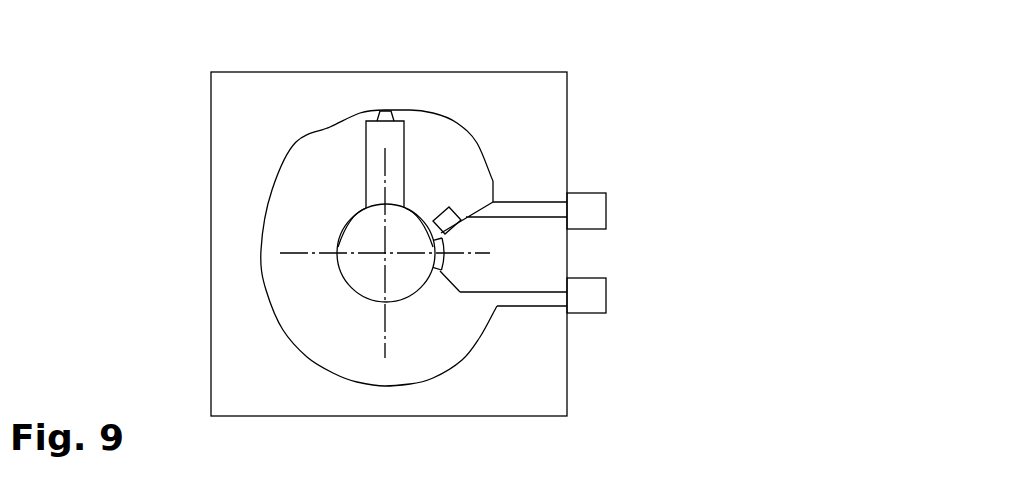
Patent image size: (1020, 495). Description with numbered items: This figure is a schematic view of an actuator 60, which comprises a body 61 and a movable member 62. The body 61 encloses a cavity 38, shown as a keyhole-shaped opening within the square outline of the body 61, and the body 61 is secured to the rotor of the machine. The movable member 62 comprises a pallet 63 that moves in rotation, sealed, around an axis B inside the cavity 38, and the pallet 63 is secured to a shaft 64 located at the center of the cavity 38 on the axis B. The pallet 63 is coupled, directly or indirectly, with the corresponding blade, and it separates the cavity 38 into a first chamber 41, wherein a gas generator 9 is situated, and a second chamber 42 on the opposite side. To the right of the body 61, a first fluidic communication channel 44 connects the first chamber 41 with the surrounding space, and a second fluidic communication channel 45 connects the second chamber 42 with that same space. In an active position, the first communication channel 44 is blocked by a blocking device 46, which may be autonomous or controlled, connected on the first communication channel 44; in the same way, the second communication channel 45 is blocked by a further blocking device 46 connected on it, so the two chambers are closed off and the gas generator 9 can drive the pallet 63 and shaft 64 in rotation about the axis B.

The actuator 60 is at (489, 50).
The body 61 is at (268, 72).
The cavity 38 is at (343, 155).
The movable member 62 is at (462, 358).
The pallet 63 is at (368, 170).
The second chamber 42 is at (325, 223).
The first chamber 41 is at (442, 166).
The shaft 64 is at (347, 265).
The axis B is at (385, 255).
The gas generator 9 is at (444, 220).
The first fluidic communication channel 44 is at (513, 205).
The second fluidic communication channel 45 is at (527, 300).
The blocking device 46 is at (527, 200).